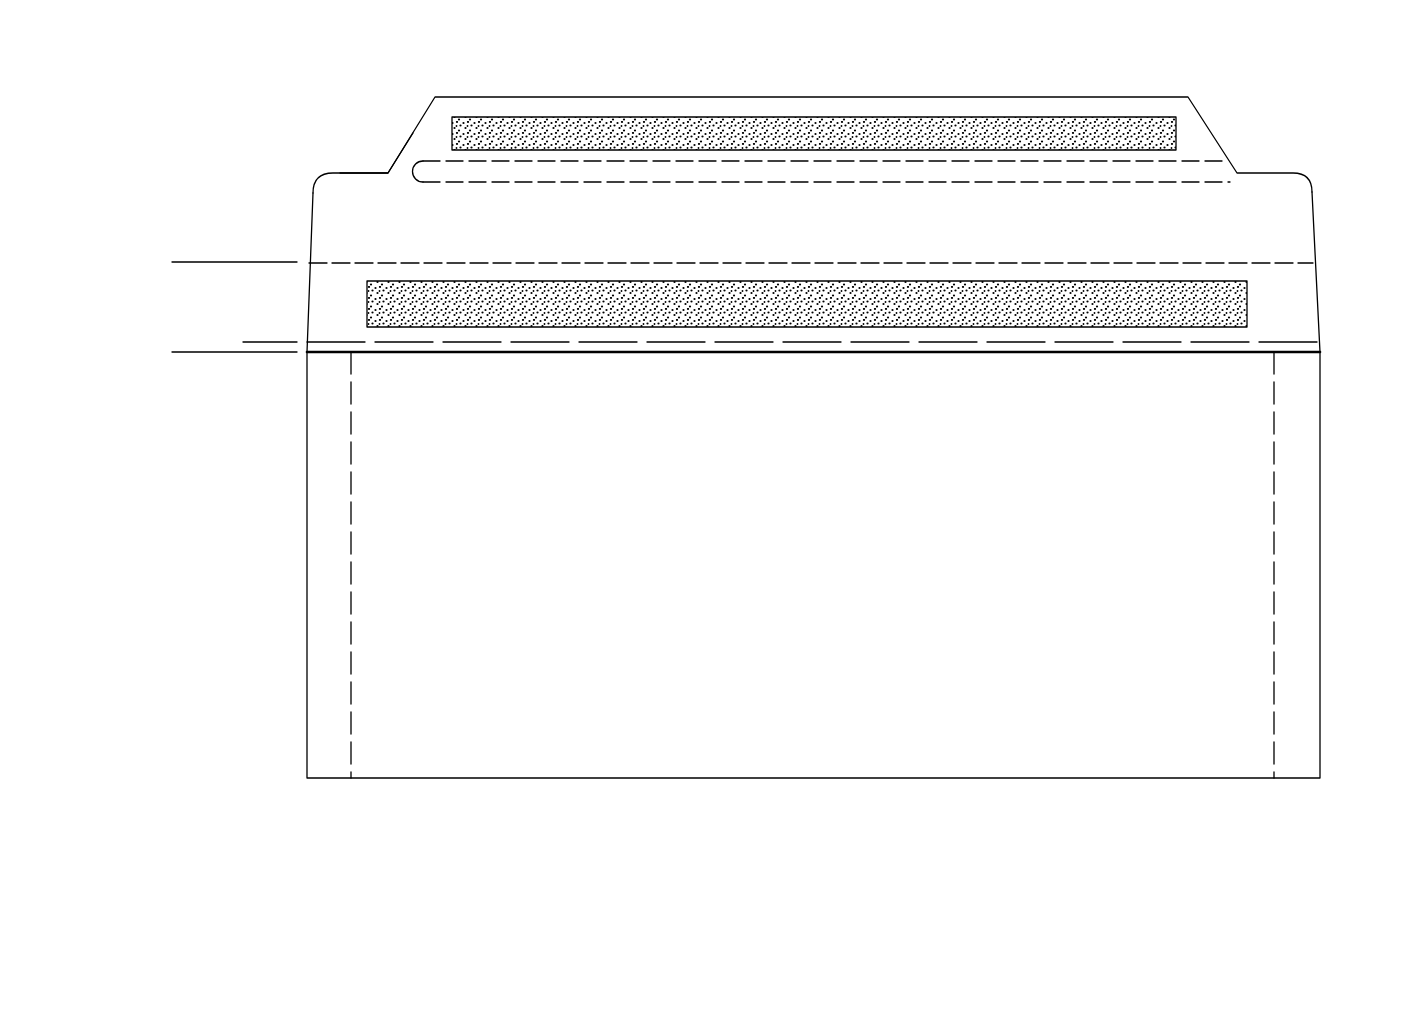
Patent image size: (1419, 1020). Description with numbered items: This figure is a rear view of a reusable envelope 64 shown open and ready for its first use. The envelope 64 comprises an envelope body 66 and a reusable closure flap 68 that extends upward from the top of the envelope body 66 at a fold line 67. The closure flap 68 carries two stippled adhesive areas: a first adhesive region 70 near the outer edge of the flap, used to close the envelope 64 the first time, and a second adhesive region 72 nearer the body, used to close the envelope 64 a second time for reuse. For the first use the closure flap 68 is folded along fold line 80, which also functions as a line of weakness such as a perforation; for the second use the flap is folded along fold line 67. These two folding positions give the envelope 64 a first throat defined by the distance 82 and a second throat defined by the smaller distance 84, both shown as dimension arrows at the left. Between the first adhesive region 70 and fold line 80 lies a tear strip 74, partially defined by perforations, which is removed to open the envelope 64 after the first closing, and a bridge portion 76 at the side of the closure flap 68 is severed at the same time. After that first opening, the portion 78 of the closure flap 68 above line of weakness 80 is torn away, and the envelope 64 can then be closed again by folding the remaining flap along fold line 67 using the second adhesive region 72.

The reusable envelope 64 is at (866, 74).
The envelope body 66 is at (1245, 560).
The fold line 67 is at (660, 345).
The reusable closure flap 68 is at (1306, 175).
The first adhesive region 70 is at (1023, 128).
The second adhesive region 72 is at (1085, 310).
The tear strip 74 is at (605, 172).
The bridge portion 76 is at (402, 167).
The portion of closure flap 78 is at (1298, 213).
The fold line / line of weakness 80 is at (912, 263).
The first throat distance 82 is at (188, 262).
The second throat distance 84 is at (270, 302).